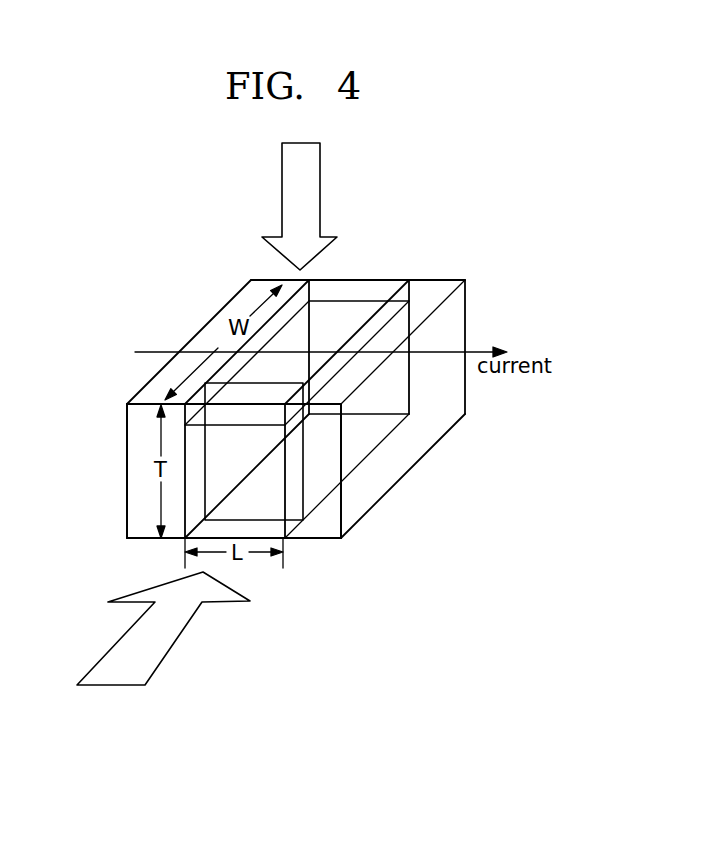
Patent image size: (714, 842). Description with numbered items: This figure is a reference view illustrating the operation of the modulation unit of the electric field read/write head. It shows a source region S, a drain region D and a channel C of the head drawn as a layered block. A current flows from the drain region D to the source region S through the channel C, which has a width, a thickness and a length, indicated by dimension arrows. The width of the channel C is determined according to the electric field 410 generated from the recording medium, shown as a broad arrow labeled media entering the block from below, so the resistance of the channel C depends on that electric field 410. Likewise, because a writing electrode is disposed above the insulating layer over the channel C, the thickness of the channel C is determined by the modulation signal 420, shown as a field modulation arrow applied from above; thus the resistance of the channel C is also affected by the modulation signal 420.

The electric field 410 is at (110, 686).
The modulation signal 420 is at (321, 153).
The drain region D is at (247, 298).
The source region S is at (440, 292).
The channel C is at (242, 455).